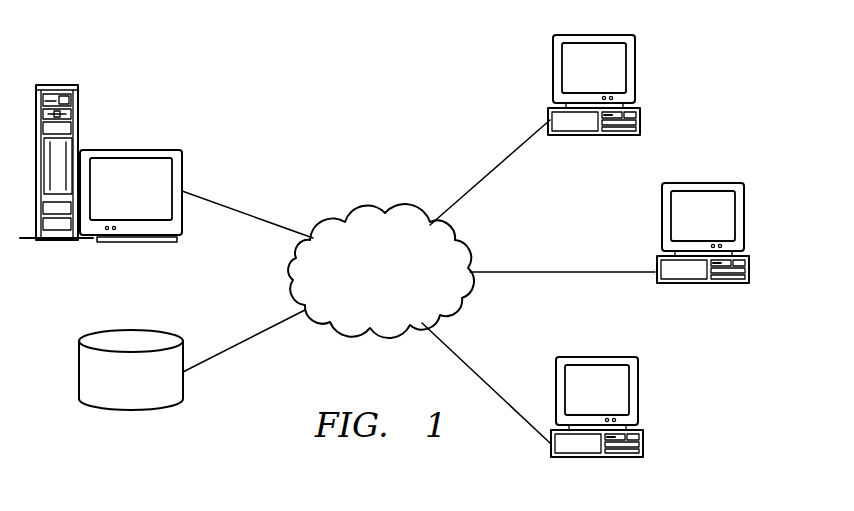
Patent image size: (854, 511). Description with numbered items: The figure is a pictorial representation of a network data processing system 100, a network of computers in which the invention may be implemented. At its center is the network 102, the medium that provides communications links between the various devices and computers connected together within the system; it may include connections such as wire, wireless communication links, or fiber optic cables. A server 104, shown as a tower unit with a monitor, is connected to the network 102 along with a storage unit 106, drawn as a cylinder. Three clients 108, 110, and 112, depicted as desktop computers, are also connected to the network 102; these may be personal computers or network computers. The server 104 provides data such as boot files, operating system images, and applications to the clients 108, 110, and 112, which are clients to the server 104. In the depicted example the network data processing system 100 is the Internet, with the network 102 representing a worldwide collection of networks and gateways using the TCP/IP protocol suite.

The network data processing system 100 is at (260, 72).
The network 102 is at (398, 297).
The server 104 is at (78, 110).
The storage unit 106 is at (79, 372).
The client 108 is at (637, 78).
The client 110 is at (741, 222).
The client 112 is at (638, 393).